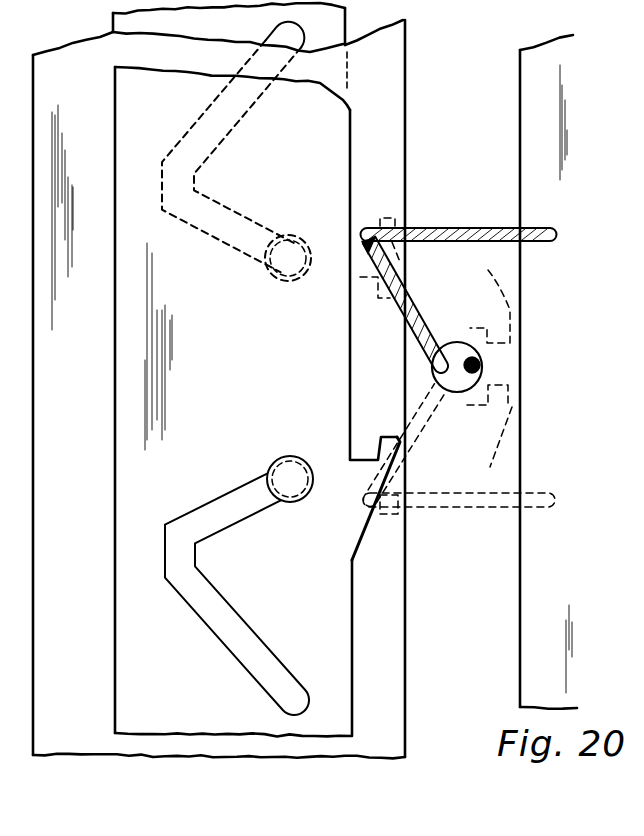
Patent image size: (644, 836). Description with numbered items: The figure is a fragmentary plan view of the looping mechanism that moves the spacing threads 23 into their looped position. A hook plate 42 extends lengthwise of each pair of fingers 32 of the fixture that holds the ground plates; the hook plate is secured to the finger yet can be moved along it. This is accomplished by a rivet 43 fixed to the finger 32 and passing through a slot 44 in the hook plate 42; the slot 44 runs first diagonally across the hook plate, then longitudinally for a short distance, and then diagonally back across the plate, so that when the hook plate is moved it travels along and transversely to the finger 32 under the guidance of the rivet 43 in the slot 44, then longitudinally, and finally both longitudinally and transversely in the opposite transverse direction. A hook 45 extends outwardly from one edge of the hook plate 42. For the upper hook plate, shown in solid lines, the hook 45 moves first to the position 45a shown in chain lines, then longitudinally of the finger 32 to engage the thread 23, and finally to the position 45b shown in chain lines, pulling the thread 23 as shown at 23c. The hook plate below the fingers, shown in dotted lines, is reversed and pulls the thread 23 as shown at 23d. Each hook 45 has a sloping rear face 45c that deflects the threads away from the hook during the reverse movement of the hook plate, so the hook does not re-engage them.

The hook plate 42 is at (123, 712).
The finger 32 is at (407, 627).
The slot 44 is at (163, 185).
The rivet 43 is at (276, 278).
The hook 45 is at (400, 447).
The first hook position 45a is at (513, 407).
The final hook position 45b is at (388, 222).
The sloping rear face 45c is at (377, 523).
The thread 23 is at (481, 366).
The thread pulled by upper hook plate 23c is at (418, 315).
The thread pulled by lower hook plate 23d is at (418, 418).